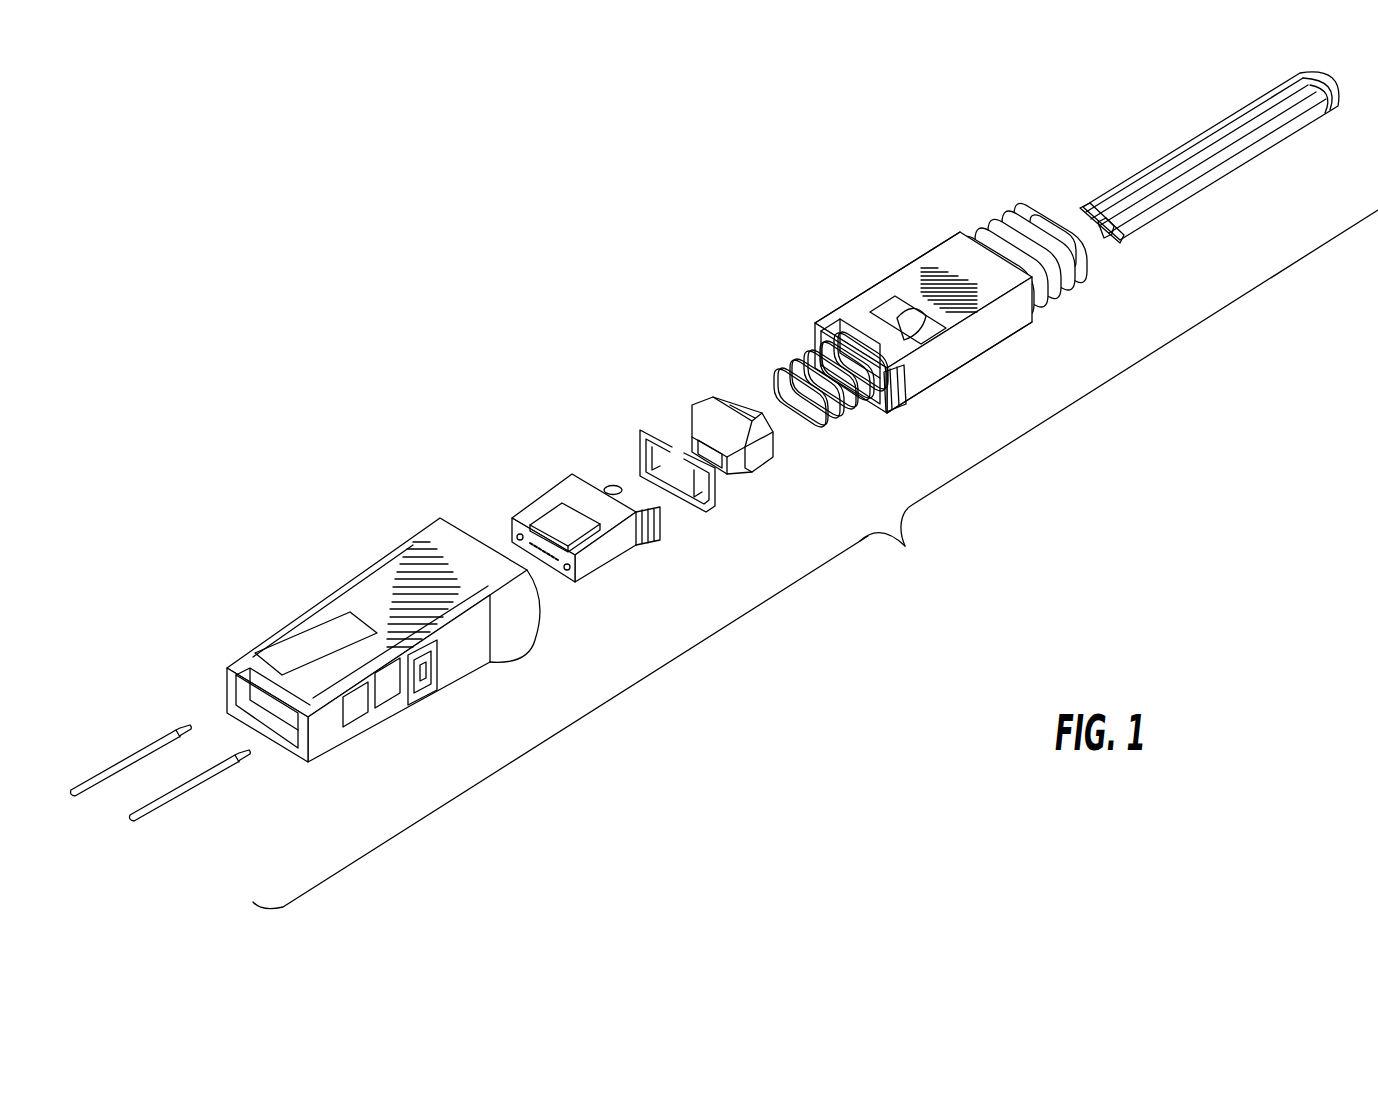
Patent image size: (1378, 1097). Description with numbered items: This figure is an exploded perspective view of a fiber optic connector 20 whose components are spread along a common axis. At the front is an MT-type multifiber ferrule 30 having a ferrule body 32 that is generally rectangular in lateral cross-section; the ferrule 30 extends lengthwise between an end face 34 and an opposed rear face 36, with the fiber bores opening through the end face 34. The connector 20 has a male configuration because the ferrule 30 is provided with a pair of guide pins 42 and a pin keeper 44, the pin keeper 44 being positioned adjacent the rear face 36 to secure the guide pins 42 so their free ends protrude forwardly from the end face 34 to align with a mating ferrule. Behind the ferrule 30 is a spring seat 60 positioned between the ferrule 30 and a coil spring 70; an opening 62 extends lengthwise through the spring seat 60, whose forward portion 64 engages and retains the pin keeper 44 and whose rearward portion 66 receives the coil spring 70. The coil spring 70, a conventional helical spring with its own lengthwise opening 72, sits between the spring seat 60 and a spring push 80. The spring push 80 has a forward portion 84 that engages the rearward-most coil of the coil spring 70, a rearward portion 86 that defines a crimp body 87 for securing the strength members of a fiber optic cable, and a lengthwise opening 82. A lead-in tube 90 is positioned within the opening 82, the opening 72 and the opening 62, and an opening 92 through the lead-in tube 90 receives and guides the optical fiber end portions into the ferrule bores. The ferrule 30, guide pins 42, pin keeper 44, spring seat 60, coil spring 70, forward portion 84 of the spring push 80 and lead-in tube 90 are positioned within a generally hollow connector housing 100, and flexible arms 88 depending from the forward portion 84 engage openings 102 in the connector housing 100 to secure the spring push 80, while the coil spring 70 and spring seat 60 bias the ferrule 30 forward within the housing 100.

The fiber optic connector 20 is at (815, 559).
The multifiber ferrule 30 is at (596, 573).
The ferrule body 32 is at (583, 577).
The end face 34 is at (505, 528).
The rear face 36 is at (598, 465).
The guide pins 42 is at (130, 757).
The pin keeper 44 is at (641, 446).
The spring seat 60 is at (761, 471).
The opening 62 is at (688, 430).
The forward portion 64 is at (713, 513).
The rearward portion 66 is at (748, 400).
The coil spring 70 is at (814, 353).
The opening 72 is at (808, 410).
The spring push 80 is at (979, 304).
The opening 82 is at (893, 303).
The forward portion 84 is at (913, 265).
The rearward portion 86 is at (1047, 210).
The crimp body 87 is at (1013, 217).
The flexible arms 88 is at (920, 390).
The lead-in tube 90 is at (1235, 170).
The opening 92 is at (1103, 233).
The connector housing 100 is at (389, 682).
The openings 102 is at (427, 677).